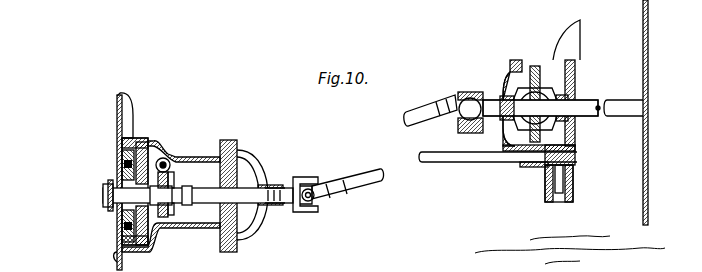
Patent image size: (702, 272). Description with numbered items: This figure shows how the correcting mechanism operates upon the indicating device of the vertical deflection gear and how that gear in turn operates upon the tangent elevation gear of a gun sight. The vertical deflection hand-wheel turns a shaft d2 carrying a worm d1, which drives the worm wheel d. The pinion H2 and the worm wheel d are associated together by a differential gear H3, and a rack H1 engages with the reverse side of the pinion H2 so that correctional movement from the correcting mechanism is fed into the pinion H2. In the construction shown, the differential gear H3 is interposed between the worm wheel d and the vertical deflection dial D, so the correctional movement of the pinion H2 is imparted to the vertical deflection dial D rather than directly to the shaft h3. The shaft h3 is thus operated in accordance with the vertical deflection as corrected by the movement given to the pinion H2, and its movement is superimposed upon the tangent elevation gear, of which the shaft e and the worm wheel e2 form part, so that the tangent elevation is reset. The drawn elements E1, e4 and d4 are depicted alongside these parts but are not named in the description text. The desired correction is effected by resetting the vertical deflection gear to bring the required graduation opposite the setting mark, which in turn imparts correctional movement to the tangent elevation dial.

The vertical deflection dial D is at (117, 130).
The rack H1 is at (202, 199).
The pinion H2 is at (122, 165).
The differential gear H3 is at (143, 138).
The worm wheel d is at (180, 168).
The worm d1 is at (165, 157).
The shaft d2 is at (172, 170).
The shaft h3 is at (232, 197).
The panel E1 is at (648, 11).
The shaft extension e4 is at (626, 103).
The control rod d4 is at (440, 158).
The worm wheel e2 is at (536, 72).
The shaft e is at (443, 112).